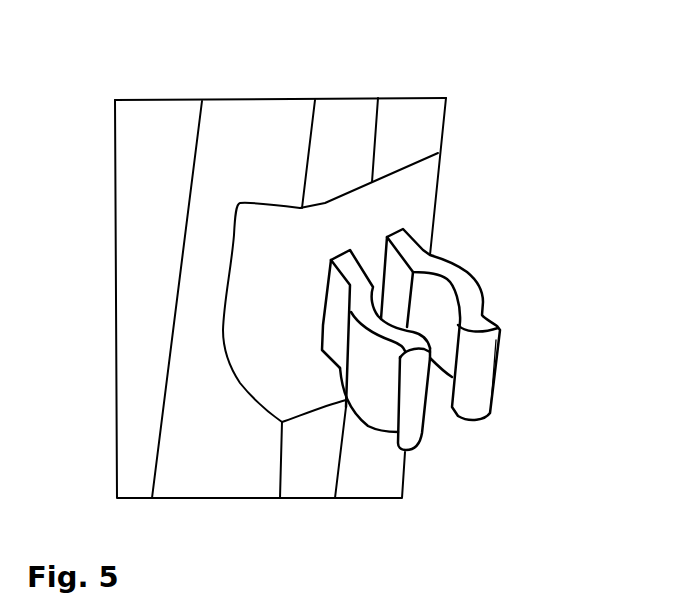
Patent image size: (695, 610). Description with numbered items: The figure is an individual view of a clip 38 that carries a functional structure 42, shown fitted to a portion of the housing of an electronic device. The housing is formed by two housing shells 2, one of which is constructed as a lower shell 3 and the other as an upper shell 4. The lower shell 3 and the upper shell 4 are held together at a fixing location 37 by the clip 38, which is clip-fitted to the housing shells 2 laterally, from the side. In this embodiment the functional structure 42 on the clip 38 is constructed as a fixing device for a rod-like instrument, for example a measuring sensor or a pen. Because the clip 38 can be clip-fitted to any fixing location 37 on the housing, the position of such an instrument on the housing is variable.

The housing shell 2 is at (237, 143).
The lower shell 3 is at (275, 155).
The upper shell 4 is at (433, 108).
The fixing location 37 is at (227, 400).
The clip 38 is at (418, 202).
The functional structure 42 is at (530, 274).